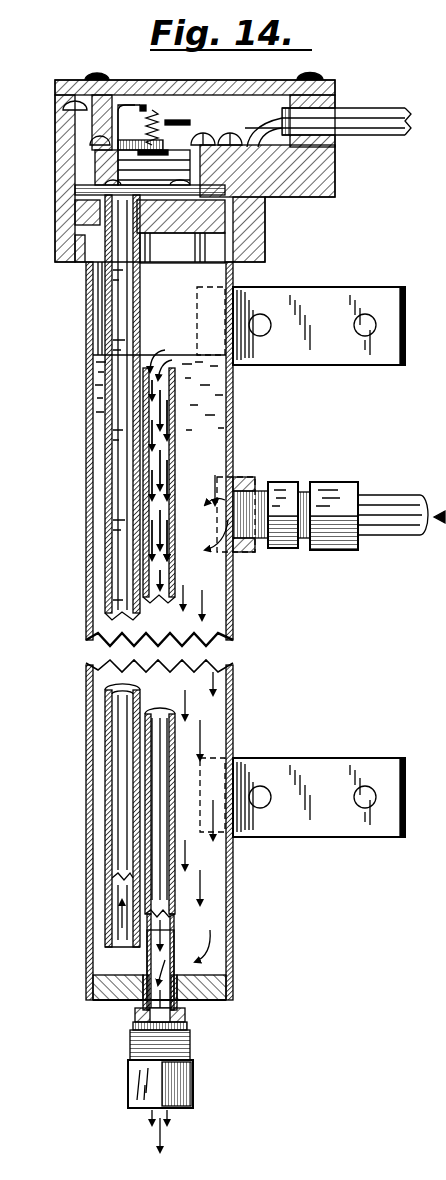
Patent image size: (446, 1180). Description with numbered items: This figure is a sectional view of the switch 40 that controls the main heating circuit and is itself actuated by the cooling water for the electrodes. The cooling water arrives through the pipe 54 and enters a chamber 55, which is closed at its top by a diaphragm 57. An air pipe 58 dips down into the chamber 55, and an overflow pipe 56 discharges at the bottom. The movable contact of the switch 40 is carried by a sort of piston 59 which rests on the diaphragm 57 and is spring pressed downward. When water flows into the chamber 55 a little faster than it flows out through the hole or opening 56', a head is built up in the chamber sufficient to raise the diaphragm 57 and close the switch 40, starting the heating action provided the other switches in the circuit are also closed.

The switch 40 is at (140, 158).
The piston 59 is at (145, 177).
The diaphragm 57 is at (183, 195).
The chamber 55 is at (233, 620).
The air pipe 58 is at (123, 563).
The overflow pipe 56 is at (185, 751).
The hole or opening 56' is at (216, 965).
The pipe 54 is at (388, 512).